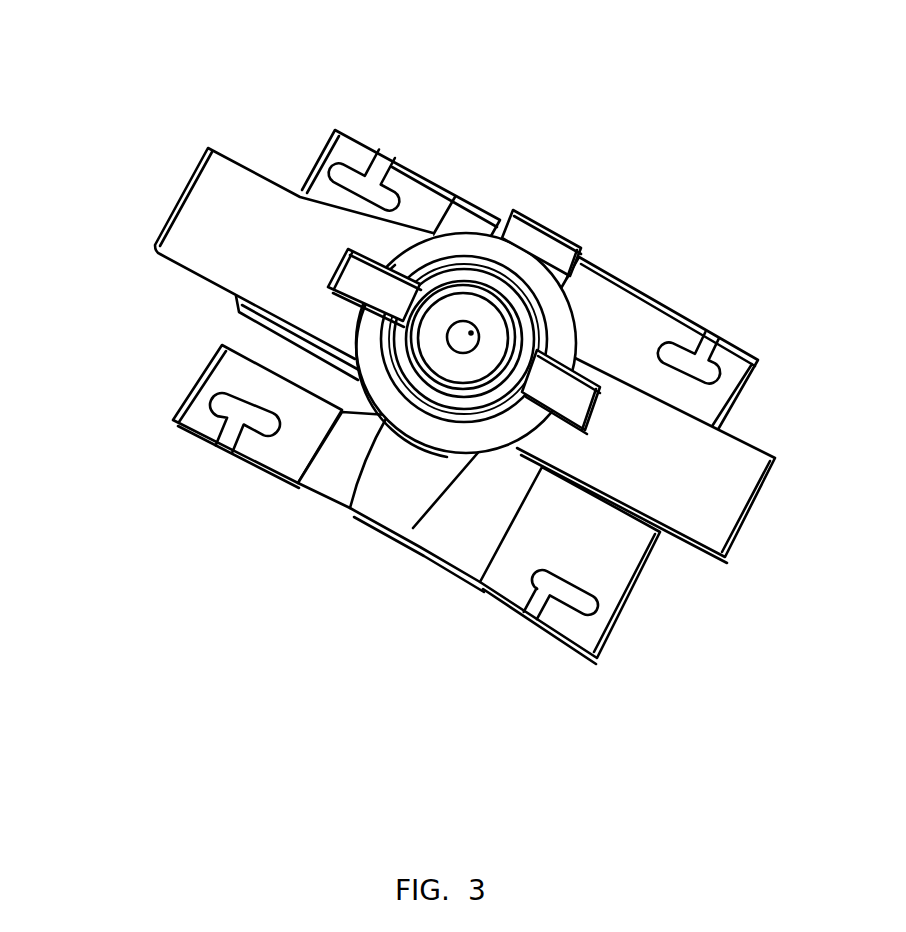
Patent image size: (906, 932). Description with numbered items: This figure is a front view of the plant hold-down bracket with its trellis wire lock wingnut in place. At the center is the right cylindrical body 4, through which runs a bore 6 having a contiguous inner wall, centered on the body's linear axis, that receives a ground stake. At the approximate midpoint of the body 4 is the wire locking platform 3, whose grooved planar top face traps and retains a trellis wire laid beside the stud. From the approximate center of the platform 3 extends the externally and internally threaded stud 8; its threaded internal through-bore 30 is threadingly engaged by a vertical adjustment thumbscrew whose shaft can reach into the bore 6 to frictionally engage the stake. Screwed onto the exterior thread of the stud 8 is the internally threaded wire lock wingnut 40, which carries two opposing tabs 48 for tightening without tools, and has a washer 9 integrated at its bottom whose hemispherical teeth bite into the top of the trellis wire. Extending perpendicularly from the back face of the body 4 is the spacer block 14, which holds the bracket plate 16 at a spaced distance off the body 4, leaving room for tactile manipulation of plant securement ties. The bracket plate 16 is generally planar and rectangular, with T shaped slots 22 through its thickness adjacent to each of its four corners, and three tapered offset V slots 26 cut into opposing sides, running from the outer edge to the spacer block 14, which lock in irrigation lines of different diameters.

The wire locking platform 3 is at (468, 340).
The right cylindrical body 4 is at (697, 522).
The bore 6 is at (343, 140).
The stud 8 is at (458, 303).
The washer 9 is at (556, 301).
The spacer block 14 is at (398, 478).
The bracket plate 16 is at (453, 530).
The T shaped slots 22 is at (692, 357).
The offset V slots 26 is at (237, 337).
The threaded internal through-bore 30 is at (472, 466).
The wire lock wingnut 40 is at (508, 298).
The tabs 48 is at (572, 397).